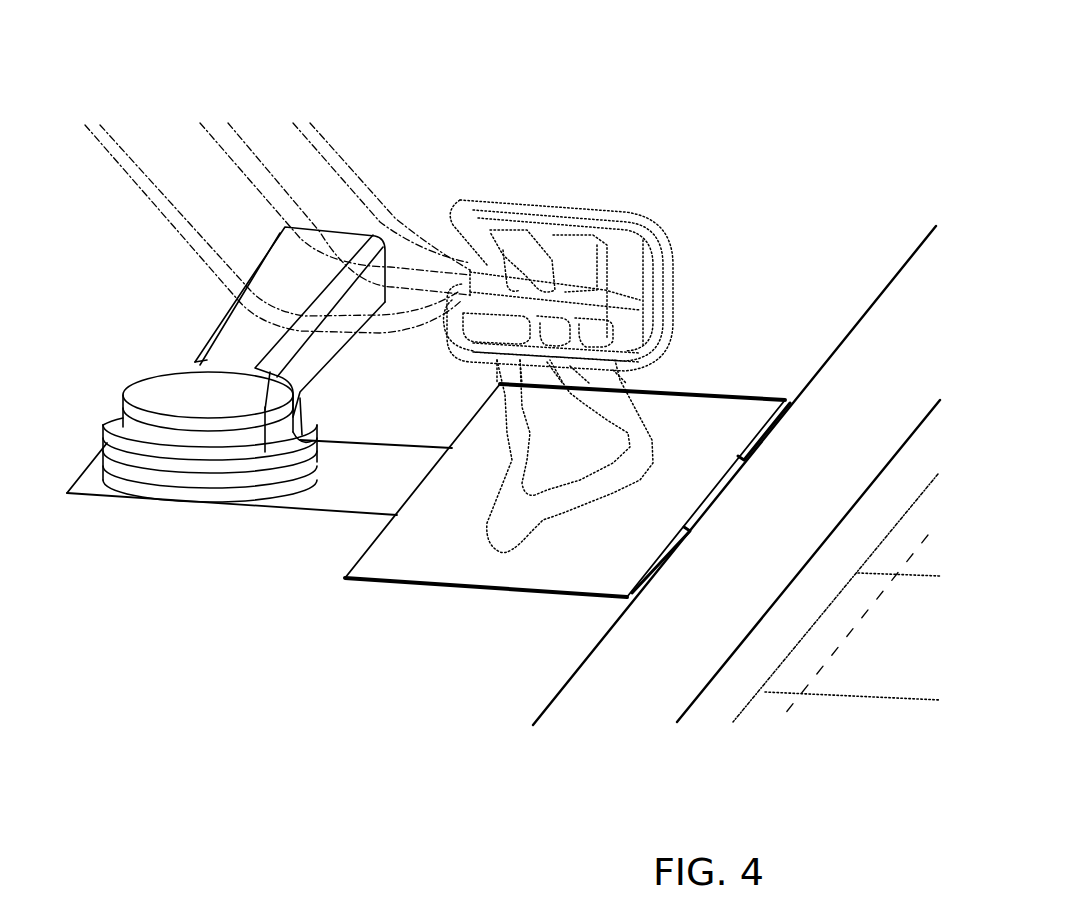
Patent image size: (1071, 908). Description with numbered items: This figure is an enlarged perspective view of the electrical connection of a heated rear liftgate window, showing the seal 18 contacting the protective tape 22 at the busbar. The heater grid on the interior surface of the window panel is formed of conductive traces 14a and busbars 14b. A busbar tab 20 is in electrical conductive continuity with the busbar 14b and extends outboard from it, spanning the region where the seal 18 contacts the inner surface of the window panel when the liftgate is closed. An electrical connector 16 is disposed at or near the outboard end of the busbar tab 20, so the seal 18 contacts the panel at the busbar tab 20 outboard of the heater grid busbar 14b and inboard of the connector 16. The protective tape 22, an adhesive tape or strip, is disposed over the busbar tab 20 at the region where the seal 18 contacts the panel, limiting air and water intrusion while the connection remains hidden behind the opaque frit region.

The conductive traces 14a is at (922, 577).
The busbars 14b is at (642, 648).
The electrical connector 16 is at (202, 381).
The seal 18 is at (560, 295).
The busbar tab 20 is at (343, 478).
The protective tape 22 is at (562, 553).